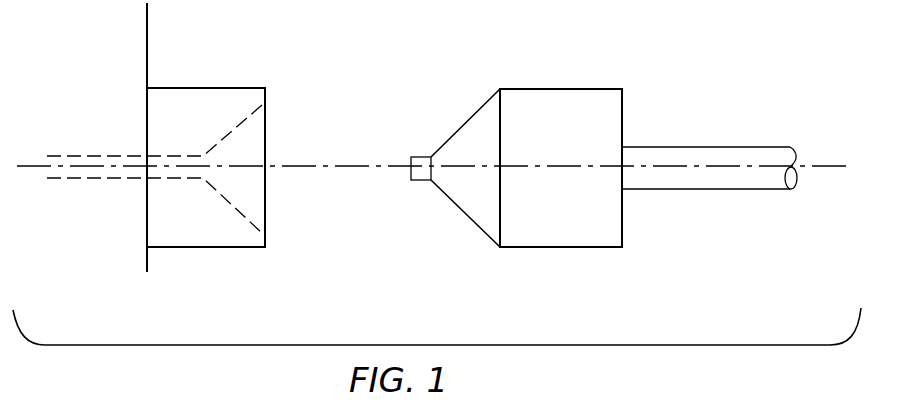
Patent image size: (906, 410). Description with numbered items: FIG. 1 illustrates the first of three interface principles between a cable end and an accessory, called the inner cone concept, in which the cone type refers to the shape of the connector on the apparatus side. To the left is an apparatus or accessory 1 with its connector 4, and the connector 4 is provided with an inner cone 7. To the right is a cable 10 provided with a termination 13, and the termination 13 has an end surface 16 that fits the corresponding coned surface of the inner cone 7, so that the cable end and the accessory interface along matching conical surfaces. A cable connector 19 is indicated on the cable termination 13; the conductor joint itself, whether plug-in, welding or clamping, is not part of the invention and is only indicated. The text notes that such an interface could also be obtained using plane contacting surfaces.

The apparatus or accessory 1 is at (147, 38).
The connector 4 is at (177, 93).
The inner cone 7 is at (257, 143).
The cable 10 is at (700, 152).
The termination 13 is at (577, 97).
The end surface 16 is at (480, 208).
The cable connector 19 is at (427, 182).